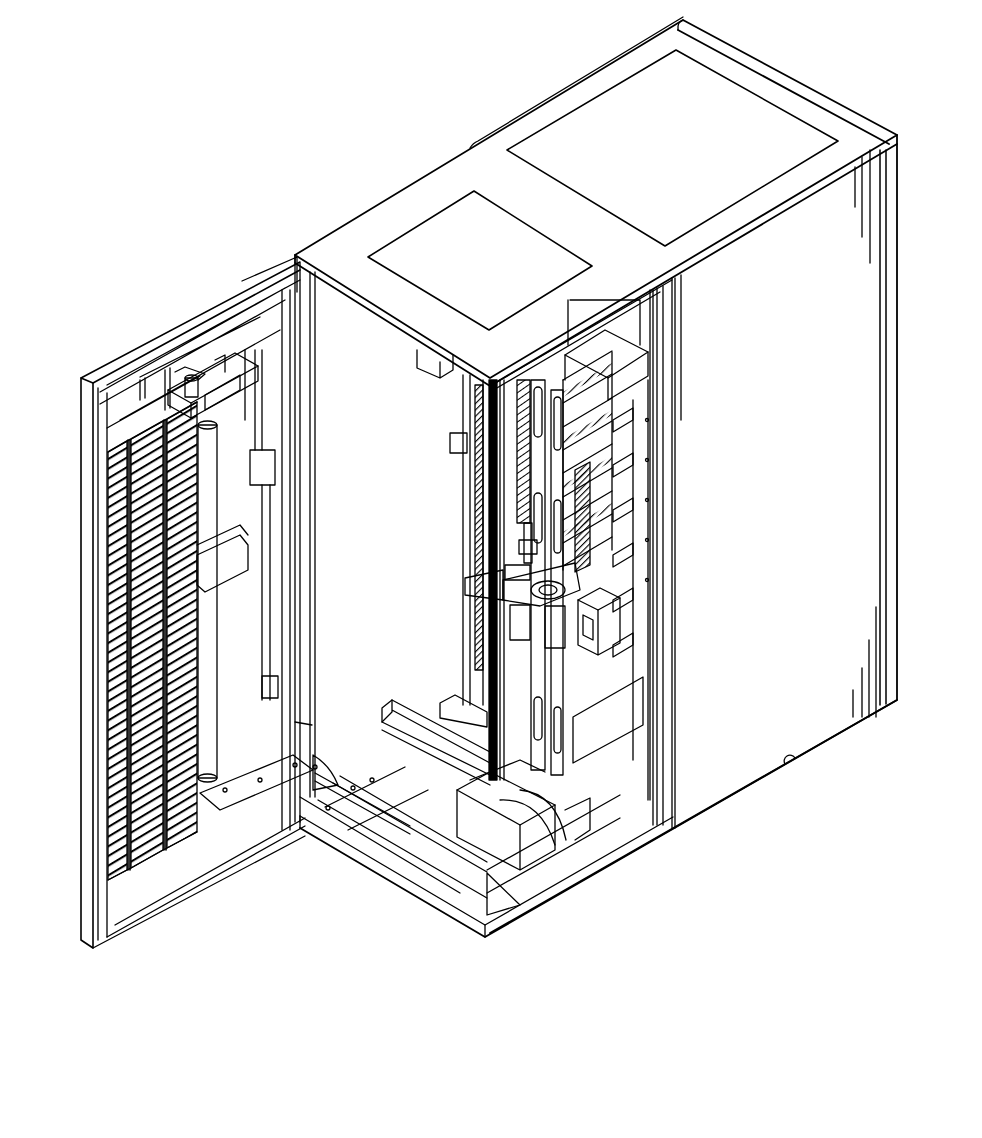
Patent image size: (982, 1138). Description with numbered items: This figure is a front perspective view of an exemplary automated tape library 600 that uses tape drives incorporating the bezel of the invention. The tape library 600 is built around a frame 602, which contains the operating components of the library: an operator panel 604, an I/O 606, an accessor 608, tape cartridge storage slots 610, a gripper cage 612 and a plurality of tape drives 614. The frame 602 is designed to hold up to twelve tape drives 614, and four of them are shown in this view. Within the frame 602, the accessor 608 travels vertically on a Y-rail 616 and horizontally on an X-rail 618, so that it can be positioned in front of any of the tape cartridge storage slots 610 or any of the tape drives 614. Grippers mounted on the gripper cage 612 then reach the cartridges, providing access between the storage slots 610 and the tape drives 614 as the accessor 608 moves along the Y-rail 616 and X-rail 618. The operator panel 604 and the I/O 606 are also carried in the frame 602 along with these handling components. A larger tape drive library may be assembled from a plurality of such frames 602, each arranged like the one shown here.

The automated tape library 600 is at (133, 100).
The frame 602 is at (760, 57).
The operator panel 604 is at (221, 350).
The I/O 606 is at (190, 376).
The accessor 608 is at (520, 820).
The tape cartridge storage slots 610 is at (110, 597).
The gripper cage 612 is at (613, 617).
The tape drive 614 is at (640, 370).
The Y-rail 616 is at (470, 578).
The X-rail 618 is at (460, 773).